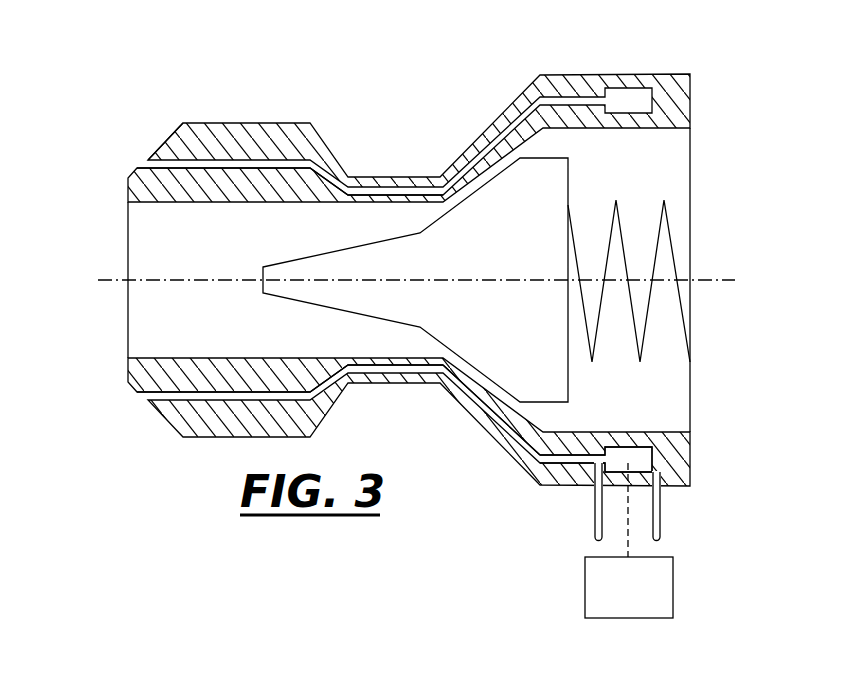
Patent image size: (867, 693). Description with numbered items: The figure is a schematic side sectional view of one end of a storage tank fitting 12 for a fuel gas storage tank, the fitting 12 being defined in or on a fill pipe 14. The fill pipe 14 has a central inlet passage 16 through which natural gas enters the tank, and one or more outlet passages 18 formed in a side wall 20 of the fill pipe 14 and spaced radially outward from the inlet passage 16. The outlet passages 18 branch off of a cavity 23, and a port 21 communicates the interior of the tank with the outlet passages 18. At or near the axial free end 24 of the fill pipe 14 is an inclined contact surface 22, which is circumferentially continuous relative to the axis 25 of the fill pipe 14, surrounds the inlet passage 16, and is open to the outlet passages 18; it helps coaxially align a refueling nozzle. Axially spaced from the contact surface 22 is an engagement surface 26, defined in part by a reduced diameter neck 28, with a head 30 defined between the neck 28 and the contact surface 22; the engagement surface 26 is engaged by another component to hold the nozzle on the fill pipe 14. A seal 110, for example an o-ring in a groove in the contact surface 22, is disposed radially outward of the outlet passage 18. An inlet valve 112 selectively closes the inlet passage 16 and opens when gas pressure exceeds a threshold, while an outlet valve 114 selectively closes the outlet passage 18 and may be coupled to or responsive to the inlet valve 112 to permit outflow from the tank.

The storage tank fitting 12 is at (405, 309).
The fill pipe 14 is at (557, 84).
The inlet passage 16 is at (148, 236).
The outlet passage 18 is at (152, 164).
The side wall 20 is at (148, 186).
The port 21 is at (655, 508).
The contact surface 22 is at (167, 418).
The cavity 23 is at (640, 460).
The axial free end 24 is at (128, 320).
The axis 25 is at (713, 280).
The engagement surface 26 is at (327, 148).
The reduced diameter neck 28 is at (390, 176).
The head 30 is at (243, 134).
The seal 110 is at (168, 140).
The inlet valve 112 is at (500, 363).
The outlet valve 114 is at (657, 589).